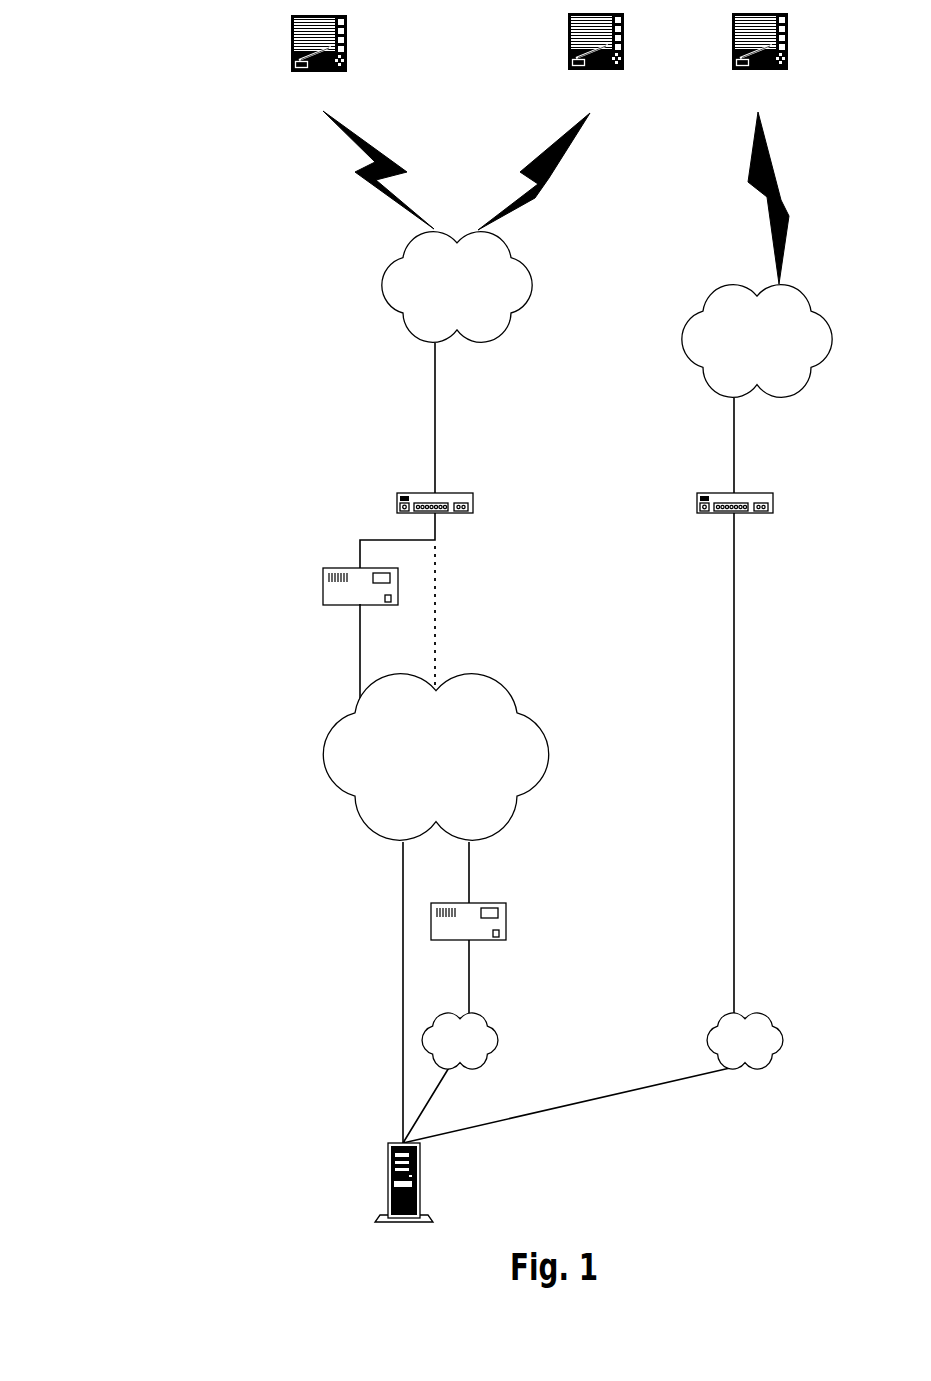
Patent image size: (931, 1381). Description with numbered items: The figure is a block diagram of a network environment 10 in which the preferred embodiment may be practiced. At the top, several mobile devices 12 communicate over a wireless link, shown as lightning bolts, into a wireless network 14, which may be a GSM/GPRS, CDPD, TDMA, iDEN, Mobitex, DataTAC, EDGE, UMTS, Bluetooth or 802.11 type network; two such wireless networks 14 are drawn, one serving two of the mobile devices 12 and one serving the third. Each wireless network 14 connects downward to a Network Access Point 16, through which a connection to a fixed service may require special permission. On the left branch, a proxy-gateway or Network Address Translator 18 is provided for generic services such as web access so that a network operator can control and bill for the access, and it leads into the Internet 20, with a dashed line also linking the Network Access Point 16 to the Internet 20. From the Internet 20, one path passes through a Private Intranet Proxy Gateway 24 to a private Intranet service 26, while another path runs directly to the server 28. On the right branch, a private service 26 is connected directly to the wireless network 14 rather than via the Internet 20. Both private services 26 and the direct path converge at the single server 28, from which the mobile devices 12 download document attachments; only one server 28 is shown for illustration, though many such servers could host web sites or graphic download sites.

The network environment 10 is at (112, 493).
The mobile devices 12 is at (539, 61).
The wireless network 14 is at (577, 254).
The Network Access Point 16 is at (397, 500).
The Network Address Translator 18 is at (323, 582).
The Internet 20 is at (435, 757).
The Private Intranet Proxy Gateway 24 is at (506, 920).
The Private Intranet services 26 is at (602, 1041).
The server 28 is at (388, 1183).